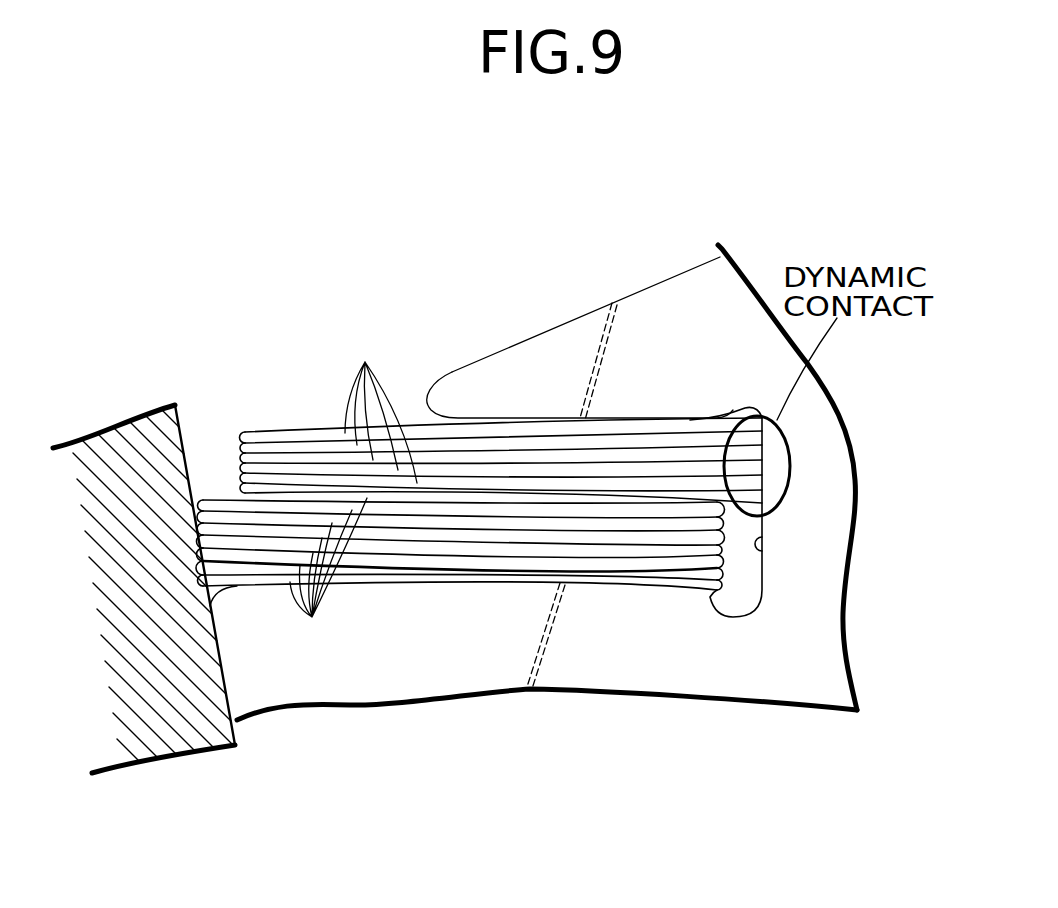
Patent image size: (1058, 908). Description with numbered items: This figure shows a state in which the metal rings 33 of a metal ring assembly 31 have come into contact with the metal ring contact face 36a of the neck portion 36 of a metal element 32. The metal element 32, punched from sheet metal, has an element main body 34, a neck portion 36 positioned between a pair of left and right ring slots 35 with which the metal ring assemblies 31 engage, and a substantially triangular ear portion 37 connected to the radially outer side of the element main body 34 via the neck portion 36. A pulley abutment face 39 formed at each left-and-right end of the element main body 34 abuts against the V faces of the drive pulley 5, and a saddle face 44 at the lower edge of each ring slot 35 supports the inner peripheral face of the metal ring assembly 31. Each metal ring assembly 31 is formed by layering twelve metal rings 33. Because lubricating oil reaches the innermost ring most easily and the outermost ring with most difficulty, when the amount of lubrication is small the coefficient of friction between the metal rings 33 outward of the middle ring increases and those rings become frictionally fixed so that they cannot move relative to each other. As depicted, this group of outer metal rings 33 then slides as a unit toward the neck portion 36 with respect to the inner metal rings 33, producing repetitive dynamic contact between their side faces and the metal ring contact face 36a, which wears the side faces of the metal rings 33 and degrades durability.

The drive pulley 5 is at (190, 441).
The metal ring assembly 31 is at (298, 423).
The metal element 32 is at (620, 288).
The metal ring 33 is at (353, 490).
The element main body 34 is at (453, 683).
The ring slot 35 is at (747, 567).
The neck portion 36 is at (812, 512).
The metal ring contact face 36a is at (759, 551).
The ear portion 37 is at (520, 353).
The pulley abutment face 39 is at (222, 680).
The saddle face 44 is at (467, 578).